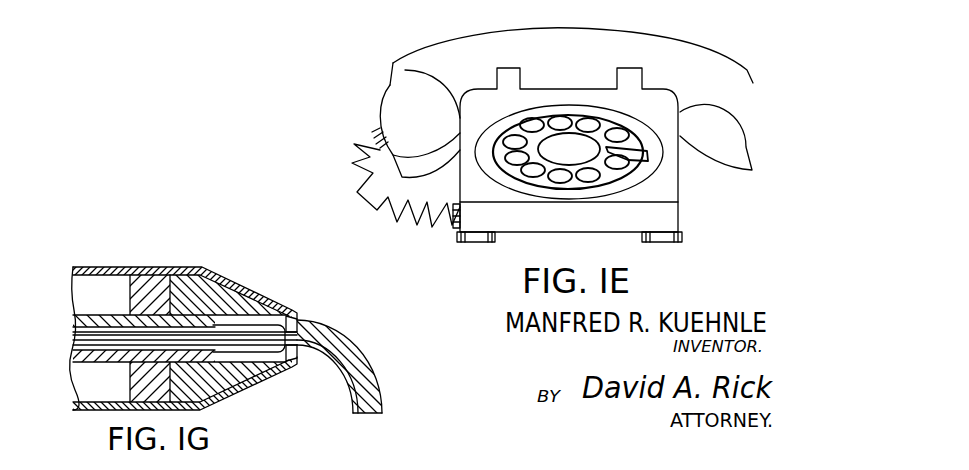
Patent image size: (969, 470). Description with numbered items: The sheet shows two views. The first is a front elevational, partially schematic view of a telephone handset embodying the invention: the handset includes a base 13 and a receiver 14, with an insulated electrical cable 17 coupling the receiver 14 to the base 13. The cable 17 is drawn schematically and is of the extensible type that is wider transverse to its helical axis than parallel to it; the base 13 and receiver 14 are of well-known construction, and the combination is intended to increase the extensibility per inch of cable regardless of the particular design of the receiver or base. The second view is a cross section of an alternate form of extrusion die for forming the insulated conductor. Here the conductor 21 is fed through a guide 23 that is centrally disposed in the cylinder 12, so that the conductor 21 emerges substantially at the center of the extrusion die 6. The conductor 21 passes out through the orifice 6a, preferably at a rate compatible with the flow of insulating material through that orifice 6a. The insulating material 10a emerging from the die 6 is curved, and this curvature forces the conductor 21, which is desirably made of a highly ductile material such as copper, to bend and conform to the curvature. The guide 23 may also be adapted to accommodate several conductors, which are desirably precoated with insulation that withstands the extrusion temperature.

In FIG. 1E, the base 13 is at (667, 188).
In FIG. 1E, the receiver 14 is at (750, 98).
In FIG. 1E, the insulated electrical cable 17 is at (360, 192).
In FIG. 1G, the cylinder 12 is at (143, 273).
In FIG. 1G, the conductor 21 is at (76, 339).
In FIG. 1G, the guide 23 is at (240, 328).
In FIG. 1G, the orifice 6a is at (283, 332).
In FIG. 1G, the extrusion die 6 is at (282, 362).
In FIG. 1G, the insulating material 10a is at (348, 350).